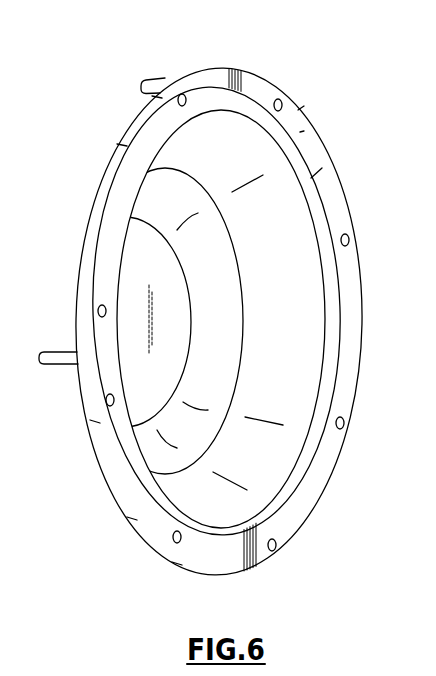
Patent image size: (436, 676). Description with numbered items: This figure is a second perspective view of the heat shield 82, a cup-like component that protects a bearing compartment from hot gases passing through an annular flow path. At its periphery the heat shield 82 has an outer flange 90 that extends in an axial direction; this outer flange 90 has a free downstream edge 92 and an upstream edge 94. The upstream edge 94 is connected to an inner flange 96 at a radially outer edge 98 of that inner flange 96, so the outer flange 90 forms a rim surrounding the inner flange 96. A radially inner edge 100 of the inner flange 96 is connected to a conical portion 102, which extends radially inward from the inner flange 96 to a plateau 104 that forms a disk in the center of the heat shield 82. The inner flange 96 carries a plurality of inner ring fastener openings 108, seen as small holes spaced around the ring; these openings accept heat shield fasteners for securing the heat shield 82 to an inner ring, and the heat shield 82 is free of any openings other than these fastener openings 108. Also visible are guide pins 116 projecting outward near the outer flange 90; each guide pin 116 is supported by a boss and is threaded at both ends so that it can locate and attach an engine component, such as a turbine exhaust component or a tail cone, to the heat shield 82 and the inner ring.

The heat shield 82 is at (280, 56).
The outer flange 90 is at (85, 240).
The free downstream edge 92 is at (130, 120).
The upstream edge 94 is at (117, 163).
The inner flange 96 is at (301, 132).
The radially outer edge 98 is at (301, 108).
The radially inner edge 100 is at (313, 177).
The conical portion 102 is at (257, 465).
The plateau 104 is at (143, 302).
The inner ring fastener openings 108 is at (187, 100).
The guide pin 116 is at (153, 78).